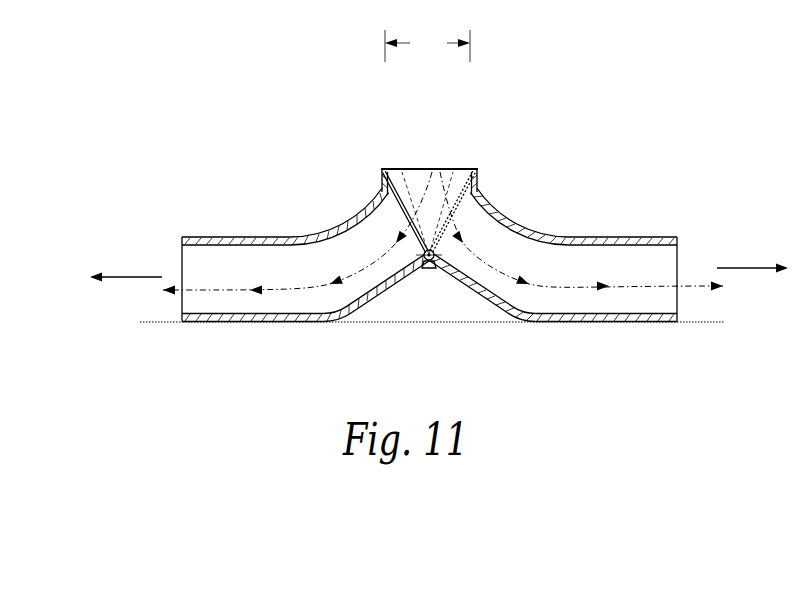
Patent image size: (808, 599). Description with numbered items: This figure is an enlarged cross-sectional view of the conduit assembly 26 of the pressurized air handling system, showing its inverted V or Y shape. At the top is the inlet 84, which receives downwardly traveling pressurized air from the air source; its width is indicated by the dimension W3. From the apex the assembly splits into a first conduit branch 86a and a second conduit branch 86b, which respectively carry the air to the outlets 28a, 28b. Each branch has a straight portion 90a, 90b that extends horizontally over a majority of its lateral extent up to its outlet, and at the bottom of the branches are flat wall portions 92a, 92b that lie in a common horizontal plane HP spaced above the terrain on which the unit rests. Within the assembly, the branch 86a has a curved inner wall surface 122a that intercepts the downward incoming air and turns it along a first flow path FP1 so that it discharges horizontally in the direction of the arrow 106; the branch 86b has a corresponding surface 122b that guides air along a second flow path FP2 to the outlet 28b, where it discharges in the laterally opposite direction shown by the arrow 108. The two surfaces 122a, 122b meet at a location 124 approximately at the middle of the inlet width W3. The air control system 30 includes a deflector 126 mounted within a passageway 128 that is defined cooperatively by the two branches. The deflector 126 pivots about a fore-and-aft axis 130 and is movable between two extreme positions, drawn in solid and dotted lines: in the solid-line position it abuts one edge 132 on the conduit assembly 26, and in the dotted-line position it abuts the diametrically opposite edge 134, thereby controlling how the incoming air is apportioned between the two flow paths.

The conduit assembly 26 is at (484, 326).
The outlet 28a is at (678, 256).
The outlet 28b is at (181, 268).
The air control system 30 is at (412, 178).
The inlet 84 is at (446, 178).
The first conduit branch 86a is at (634, 323).
The second conduit branch 86b is at (270, 323).
The straight portion 90a is at (648, 224).
The straight portion 90b is at (266, 225).
The flat wall portion 92a is at (583, 323).
The flat wall portion 92b is at (221, 323).
The arrow 106 is at (749, 268).
The arrow 108 is at (128, 277).
The curved inner wall surface 122a is at (499, 213).
The curved inner wall surface 122b is at (362, 300).
The location 124 is at (430, 250).
The deflector 126 is at (400, 178).
The passageway 128 is at (538, 251).
The fore-and-aft axis 130 is at (432, 268).
The edge 132 is at (392, 178).
The edge 134 is at (474, 170).
The first flow path FP1 is at (565, 286).
The second flow path FP2 is at (283, 290).
The horizontal plane HP is at (366, 323).
The width W3 is at (427, 46).